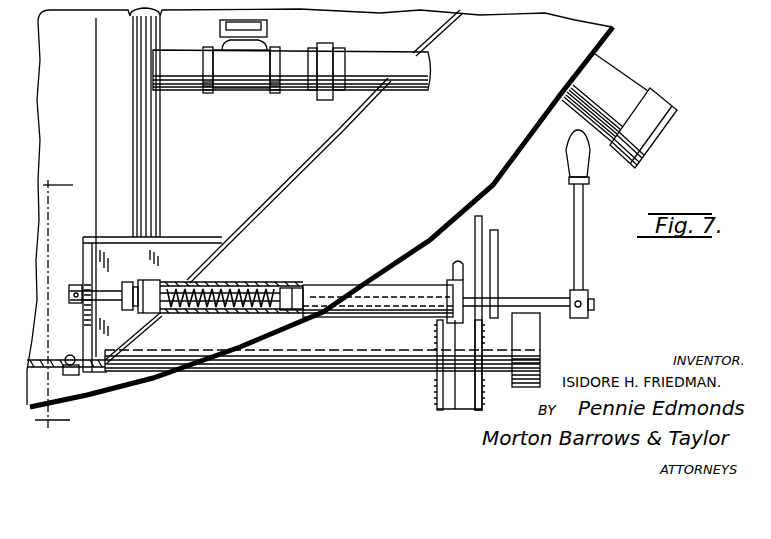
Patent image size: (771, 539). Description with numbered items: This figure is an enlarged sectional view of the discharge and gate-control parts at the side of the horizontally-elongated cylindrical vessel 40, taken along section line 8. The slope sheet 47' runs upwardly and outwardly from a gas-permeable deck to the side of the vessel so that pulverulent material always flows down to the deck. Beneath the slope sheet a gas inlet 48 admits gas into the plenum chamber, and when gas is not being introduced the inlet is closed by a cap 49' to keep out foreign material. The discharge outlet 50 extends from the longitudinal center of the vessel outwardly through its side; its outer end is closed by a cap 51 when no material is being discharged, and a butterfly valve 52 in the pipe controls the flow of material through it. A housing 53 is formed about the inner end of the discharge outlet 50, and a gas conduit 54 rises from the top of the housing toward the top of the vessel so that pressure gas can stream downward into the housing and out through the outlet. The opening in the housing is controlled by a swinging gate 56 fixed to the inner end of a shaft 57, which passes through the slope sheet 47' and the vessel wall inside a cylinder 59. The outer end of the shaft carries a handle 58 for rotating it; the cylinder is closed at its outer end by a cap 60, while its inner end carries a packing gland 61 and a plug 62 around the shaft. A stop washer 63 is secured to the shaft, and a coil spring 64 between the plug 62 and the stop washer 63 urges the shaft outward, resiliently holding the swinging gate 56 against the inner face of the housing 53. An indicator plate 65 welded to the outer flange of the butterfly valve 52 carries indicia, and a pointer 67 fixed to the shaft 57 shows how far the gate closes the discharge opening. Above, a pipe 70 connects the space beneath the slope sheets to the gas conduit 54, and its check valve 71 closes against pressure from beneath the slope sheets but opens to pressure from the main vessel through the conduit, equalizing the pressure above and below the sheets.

The section line 8- 8 is at (54, 303).
The cylindrical vessel 40 is at (165, 388).
The slope sheet 47' is at (325, 146).
The gas inlet 48 is at (618, 88).
The cap 49' is at (658, 119).
The discharge outlet 50 is at (365, 372).
The cap 51 is at (535, 358).
The butterfly valve 52 is at (462, 392).
The housing 53 is at (88, 268).
The gas conduit 54 is at (103, 127).
The swinging gate 56 is at (83, 240).
The shaft 57 is at (108, 298).
The handle 58 is at (585, 238).
The cylinder 59 is at (333, 288).
The cap 60 is at (450, 308).
The packing gland 61 is at (127, 282).
The plug 62 is at (167, 280).
The stop washer 63 is at (284, 288).
The coil spring 64 is at (233, 290).
The indicator plate 65 is at (483, 221).
The pointer 67 is at (498, 242).
The pipe 70 is at (196, 91).
The check valve 71 is at (262, 91).